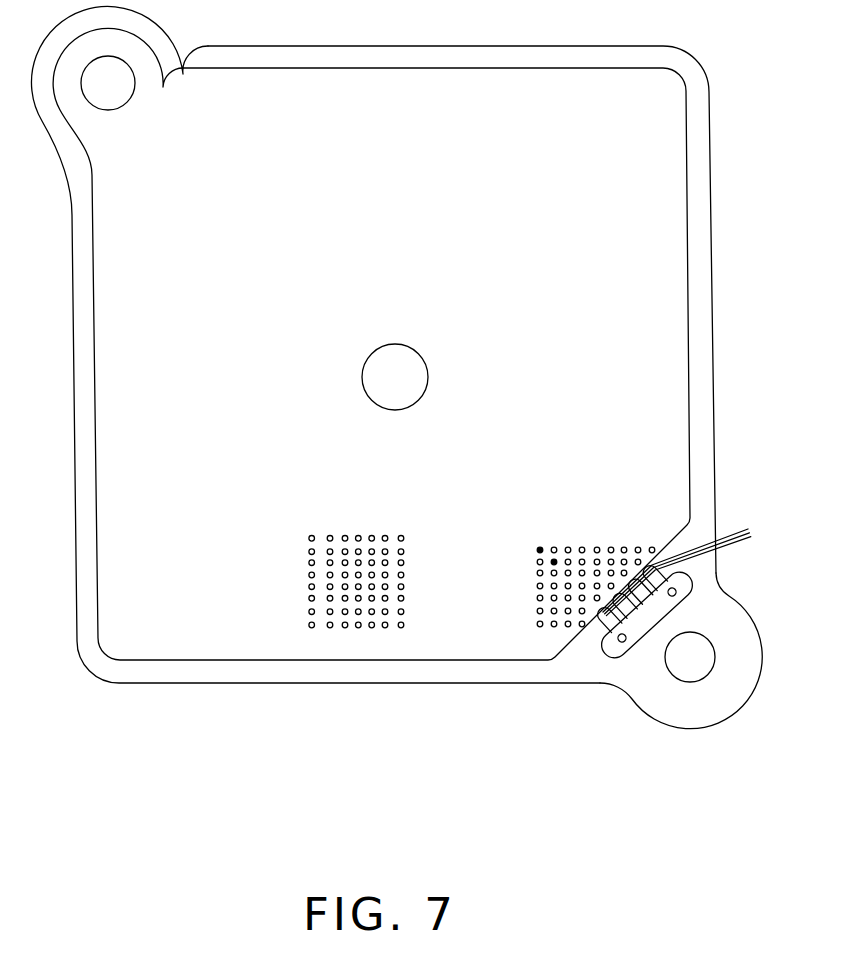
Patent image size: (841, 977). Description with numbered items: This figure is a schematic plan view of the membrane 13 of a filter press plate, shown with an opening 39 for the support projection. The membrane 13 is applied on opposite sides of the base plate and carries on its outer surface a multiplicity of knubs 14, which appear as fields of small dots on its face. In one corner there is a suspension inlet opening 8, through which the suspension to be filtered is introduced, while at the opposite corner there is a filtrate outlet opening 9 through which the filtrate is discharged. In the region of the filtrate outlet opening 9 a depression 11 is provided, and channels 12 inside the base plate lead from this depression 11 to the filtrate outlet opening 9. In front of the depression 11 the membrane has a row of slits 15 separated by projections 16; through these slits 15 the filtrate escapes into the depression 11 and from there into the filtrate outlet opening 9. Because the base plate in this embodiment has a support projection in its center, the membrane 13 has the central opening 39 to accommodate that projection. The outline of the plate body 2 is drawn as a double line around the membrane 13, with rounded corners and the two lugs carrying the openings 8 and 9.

The filter plate body 2 is at (377, 670).
The suspension inlet opening 8 is at (125, 95).
The filtrate outlet opening 9 is at (660, 707).
The depression 11 is at (665, 608).
The channels 12 is at (690, 578).
The membrane 13 is at (120, 572).
The knubs 14 is at (358, 552).
The slits 15 is at (690, 570).
The projections 16 is at (600, 626).
The opening 39 is at (408, 355).